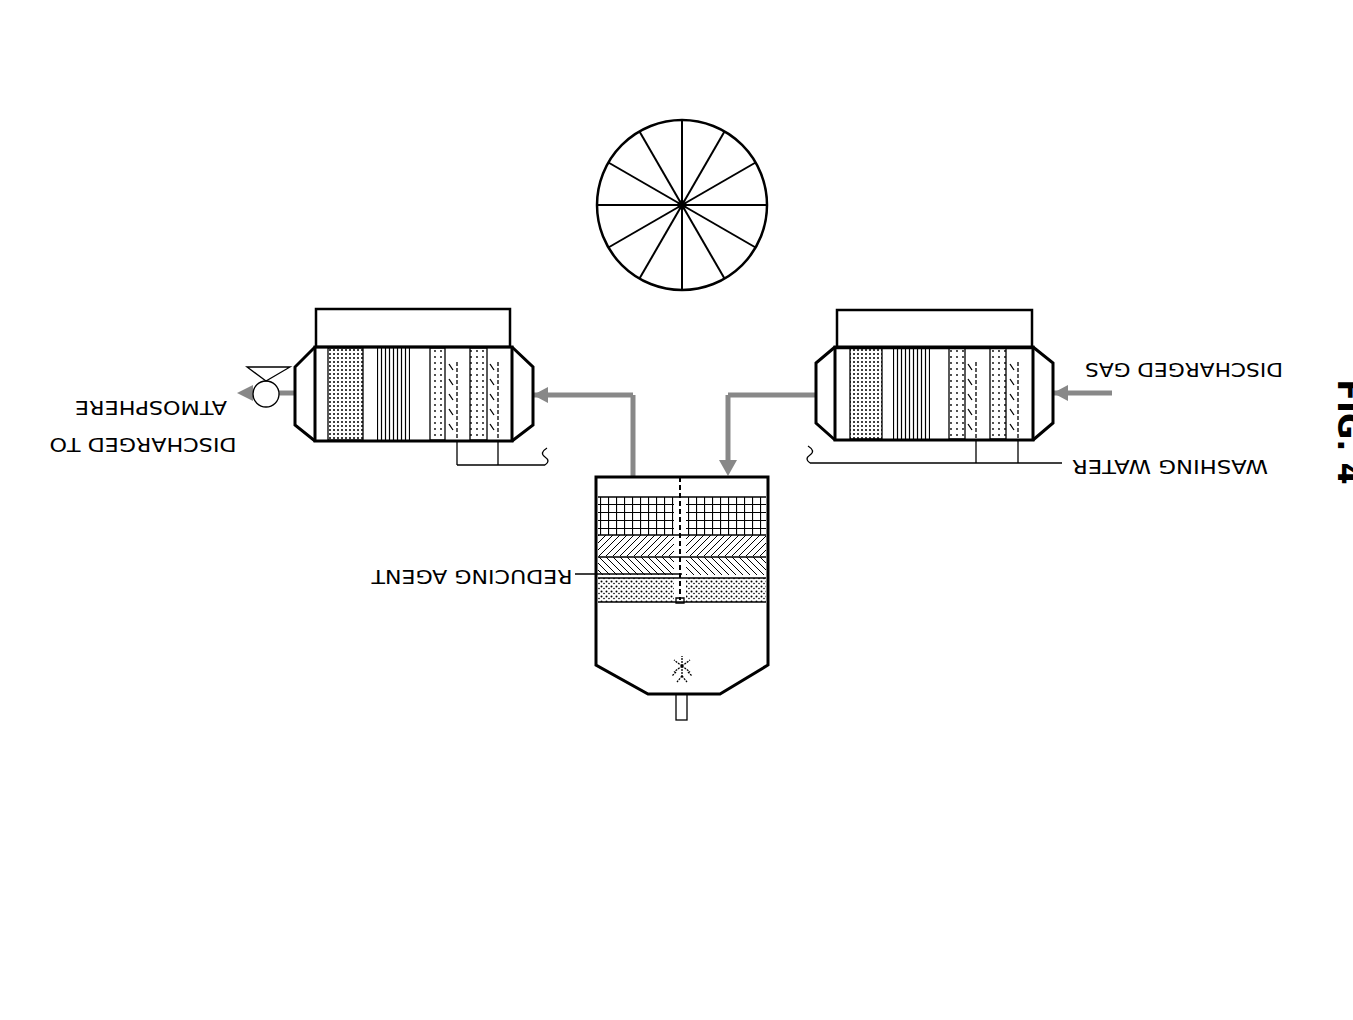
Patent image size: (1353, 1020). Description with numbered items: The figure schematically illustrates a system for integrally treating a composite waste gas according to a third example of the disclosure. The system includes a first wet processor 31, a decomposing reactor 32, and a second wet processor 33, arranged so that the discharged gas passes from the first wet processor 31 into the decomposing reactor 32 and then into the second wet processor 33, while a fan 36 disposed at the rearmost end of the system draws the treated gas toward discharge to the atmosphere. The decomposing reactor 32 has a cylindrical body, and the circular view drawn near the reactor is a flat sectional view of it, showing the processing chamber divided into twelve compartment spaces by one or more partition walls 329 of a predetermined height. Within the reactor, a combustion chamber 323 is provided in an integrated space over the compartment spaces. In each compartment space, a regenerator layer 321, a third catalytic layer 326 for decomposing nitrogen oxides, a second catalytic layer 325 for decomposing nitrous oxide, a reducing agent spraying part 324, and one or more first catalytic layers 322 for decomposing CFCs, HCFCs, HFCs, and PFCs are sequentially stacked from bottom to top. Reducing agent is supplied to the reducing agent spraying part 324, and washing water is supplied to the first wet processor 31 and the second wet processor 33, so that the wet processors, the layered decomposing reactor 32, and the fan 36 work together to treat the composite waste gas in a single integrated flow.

The first wet processor 31 is at (809, 345).
The decomposing reactor 32 is at (664, 437).
The second wet processor 33 is at (342, 455).
The fan 36 is at (266, 368).
The regenerator layer 321 is at (745, 518).
The first catalytic layer 322 is at (740, 605).
The combustion chamber 323 is at (697, 633).
The reducing agent spraying part 324 is at (740, 588).
The second catalytic layer 325 is at (740, 565).
The third catalytic layer 326 is at (745, 545).
The partition wall 329 is at (622, 208).